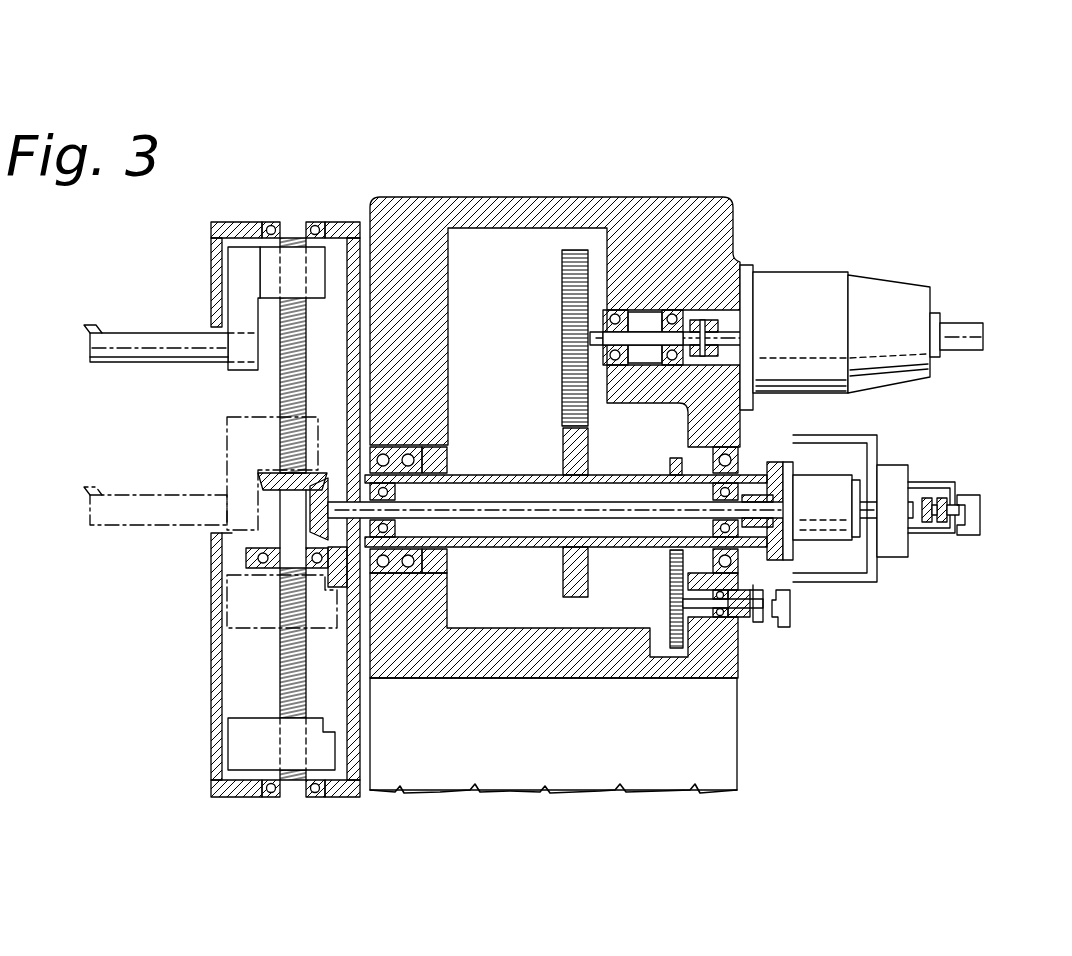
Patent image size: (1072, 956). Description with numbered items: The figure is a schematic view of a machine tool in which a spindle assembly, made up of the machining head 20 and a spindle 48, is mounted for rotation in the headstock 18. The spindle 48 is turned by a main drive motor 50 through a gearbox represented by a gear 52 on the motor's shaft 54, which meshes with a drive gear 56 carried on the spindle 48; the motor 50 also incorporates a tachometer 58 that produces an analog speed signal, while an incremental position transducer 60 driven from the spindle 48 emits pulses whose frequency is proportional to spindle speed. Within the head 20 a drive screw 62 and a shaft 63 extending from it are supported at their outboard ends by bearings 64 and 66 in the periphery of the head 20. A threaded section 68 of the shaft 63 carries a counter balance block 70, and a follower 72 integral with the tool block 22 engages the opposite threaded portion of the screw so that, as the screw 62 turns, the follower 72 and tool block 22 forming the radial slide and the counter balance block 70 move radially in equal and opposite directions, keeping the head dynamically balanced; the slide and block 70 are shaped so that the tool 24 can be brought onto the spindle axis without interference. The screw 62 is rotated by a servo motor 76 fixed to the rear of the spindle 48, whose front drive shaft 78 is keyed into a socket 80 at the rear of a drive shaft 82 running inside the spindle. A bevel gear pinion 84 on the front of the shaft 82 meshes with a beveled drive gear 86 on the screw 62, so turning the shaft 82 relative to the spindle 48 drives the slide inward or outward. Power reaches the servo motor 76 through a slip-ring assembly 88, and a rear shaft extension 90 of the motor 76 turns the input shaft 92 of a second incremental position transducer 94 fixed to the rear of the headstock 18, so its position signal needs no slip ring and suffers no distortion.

The headstock 18 is at (700, 210).
The machining head 20 is at (252, 220).
The tool block 22 is at (243, 300).
The tool 24 is at (183, 352).
The spindle 48 is at (520, 545).
The main drive motor 50 is at (797, 290).
The gear 52 is at (575, 292).
The shaft 54 is at (598, 338).
The drive gear 56 is at (580, 445).
The tachometer 58 is at (963, 328).
The incremental position transducer 60 is at (785, 617).
The drive screw 62 is at (290, 383).
The shaft 63 is at (290, 586).
The bearing 64 is at (310, 225).
The bearing 66 is at (272, 798).
The threaded section 68 is at (290, 655).
The counter balance block 70 is at (240, 607).
The follower 72 is at (272, 258).
The servo motor 76 is at (832, 493).
The drive shaft 78 is at (775, 508).
The socket 80 is at (742, 497).
The drive shaft 82 is at (620, 505).
The bevel gear pinion 84 is at (318, 518).
The beveled drive gear 86 is at (283, 468).
The slip-ring assembly 88 is at (895, 478).
The rear shaft extension 90 is at (898, 512).
The input shaft 92 is at (945, 498).
The incremental position transducer 94 is at (972, 523).